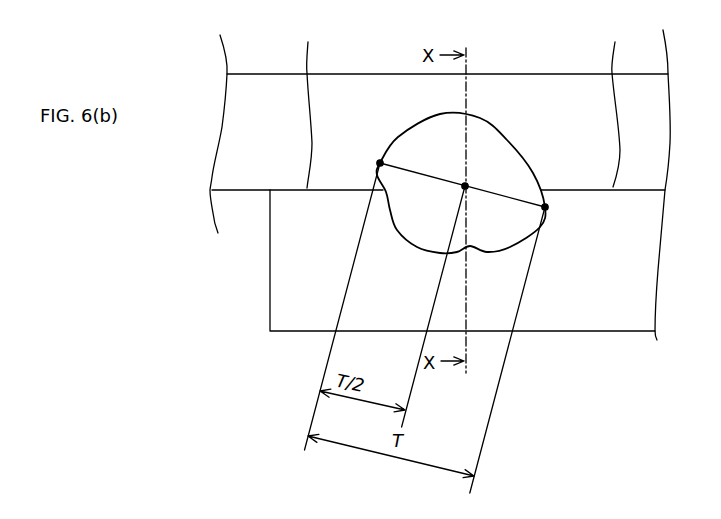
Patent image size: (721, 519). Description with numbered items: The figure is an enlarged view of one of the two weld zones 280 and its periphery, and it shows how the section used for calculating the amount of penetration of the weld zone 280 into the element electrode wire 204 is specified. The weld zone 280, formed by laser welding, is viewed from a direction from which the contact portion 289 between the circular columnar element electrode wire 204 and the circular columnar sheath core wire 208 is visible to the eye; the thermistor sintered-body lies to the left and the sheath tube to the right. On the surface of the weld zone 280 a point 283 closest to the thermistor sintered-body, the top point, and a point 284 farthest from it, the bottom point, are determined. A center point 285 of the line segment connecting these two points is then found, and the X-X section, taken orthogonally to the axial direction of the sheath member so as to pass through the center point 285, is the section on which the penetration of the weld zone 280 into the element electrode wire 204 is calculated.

The element electrode wire 204 is at (262, 110).
The contact portion 289 is at (465, 104).
The weld zone 280 is at (502, 160).
The point closest to the thermistor sintered-body (top point) 283 is at (380, 163).
The point farthest from the thermistor sintered-body (bottom point) 284 is at (545, 207).
The center point 285 is at (465, 186).
The sheath core wire 208 is at (303, 272).